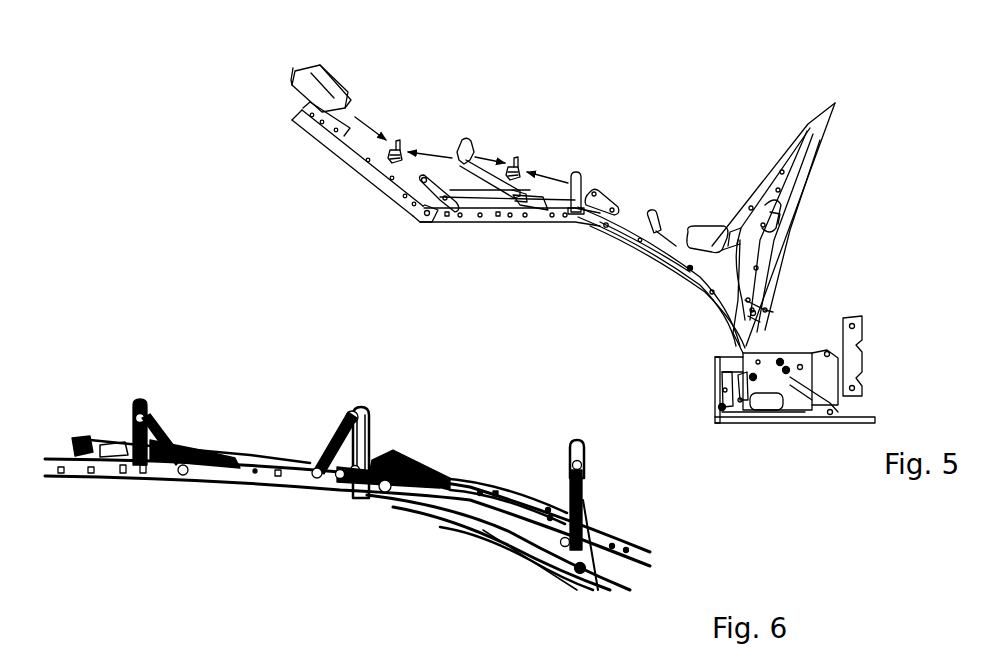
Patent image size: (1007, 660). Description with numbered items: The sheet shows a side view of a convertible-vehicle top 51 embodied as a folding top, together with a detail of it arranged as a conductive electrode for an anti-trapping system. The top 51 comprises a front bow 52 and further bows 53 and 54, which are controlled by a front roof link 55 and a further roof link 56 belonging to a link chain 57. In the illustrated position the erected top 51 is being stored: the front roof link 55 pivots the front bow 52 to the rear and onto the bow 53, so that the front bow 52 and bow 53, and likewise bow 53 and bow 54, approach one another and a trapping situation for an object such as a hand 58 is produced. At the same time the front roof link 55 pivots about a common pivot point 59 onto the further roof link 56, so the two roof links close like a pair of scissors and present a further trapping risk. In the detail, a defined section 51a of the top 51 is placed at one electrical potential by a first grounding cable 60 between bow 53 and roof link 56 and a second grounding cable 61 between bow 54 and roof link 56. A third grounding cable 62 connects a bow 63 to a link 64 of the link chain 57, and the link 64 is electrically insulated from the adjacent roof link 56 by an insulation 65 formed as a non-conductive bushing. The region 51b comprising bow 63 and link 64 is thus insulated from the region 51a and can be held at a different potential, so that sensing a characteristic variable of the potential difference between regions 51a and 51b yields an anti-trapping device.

In FIG. 5, the top 51 is at (629, 112).
In FIG. 6, the top 51 is at (466, 392).
In FIG. 6, the defined section of the top 51a is at (246, 419).
In FIG. 6, the region of the top 51b is at (473, 470).
In FIG. 5, the front bow 52 is at (331, 80).
In FIG. 5, the bow 53 is at (463, 140).
In FIG. 6, the bow 53 is at (138, 398).
In FIG. 5, the bow 54 is at (574, 174).
In FIG. 6, the bow 54 is at (365, 408).
In FIG. 5, the front roof link 55 is at (378, 172).
In FIG. 5, the further roof link 56 is at (500, 226).
In FIG. 6, the further roof link 56 is at (248, 483).
In FIG. 5, the link chain 57 is at (428, 250).
In FIG. 6, the link chain 57 is at (475, 556).
In FIG. 5, the hand 58 is at (397, 136).
In FIG. 5, the common pivot point 59 is at (424, 217).
In FIG. 6, the first grounding cable 60 is at (160, 432).
In FIG. 6, the second grounding cable 61 is at (336, 442).
In FIG. 6, the third grounding cable 62 is at (570, 472).
In FIG. 6, the bow 63 is at (586, 443).
In FIG. 6, the link 64 is at (518, 497).
In FIG. 6, the insulation 65 is at (354, 492).